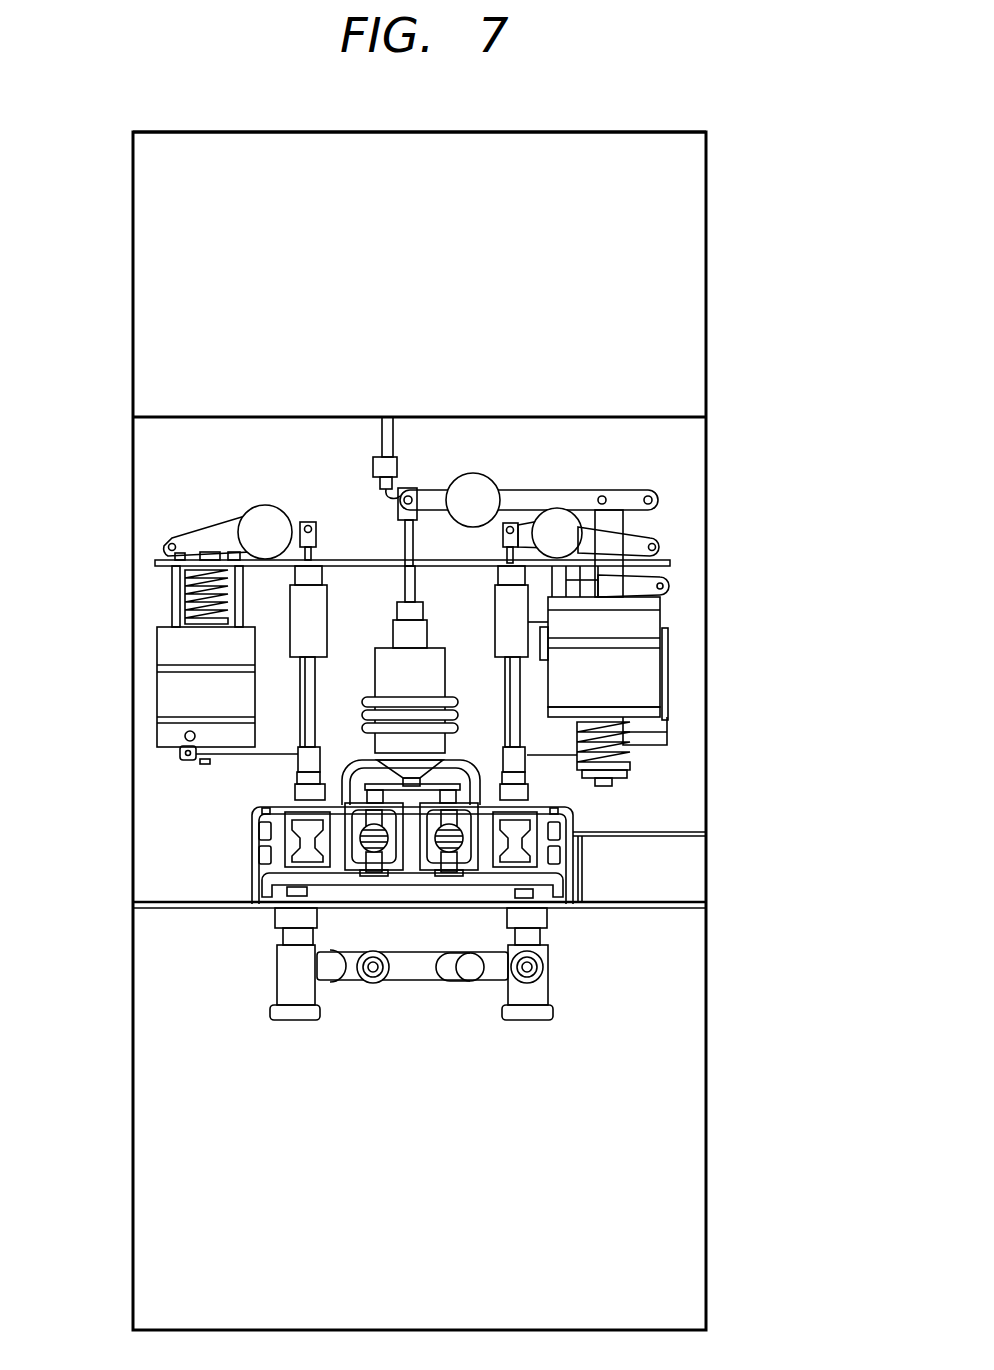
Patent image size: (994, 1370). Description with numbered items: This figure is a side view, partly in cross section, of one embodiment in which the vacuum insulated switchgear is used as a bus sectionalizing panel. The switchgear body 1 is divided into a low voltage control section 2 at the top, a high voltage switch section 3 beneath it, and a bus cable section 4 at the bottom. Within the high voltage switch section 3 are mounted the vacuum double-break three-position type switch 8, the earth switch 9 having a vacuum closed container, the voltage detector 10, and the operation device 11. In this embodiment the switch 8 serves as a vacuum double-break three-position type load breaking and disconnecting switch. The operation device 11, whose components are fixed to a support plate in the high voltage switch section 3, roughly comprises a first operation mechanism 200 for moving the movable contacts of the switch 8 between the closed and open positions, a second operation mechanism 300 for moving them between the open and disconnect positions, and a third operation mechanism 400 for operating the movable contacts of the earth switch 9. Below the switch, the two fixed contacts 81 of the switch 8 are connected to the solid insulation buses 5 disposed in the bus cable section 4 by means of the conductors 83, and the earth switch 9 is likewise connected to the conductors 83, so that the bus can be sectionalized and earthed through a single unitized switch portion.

The body 1 is at (728, 228).
The low voltage control section 2 is at (680, 308).
The high voltage switch section 3 is at (680, 440).
The bus cable section 4 is at (690, 958).
The solid insulation buses 5 is at (280, 960).
The vacuum double-break three-position type switch 8 is at (412, 880).
The earth switch 9 is at (282, 800).
The voltage detector 10 is at (258, 840).
The operation device 11 is at (676, 512).
The fixed contacts 81 is at (365, 876).
The conductors 83 is at (262, 885).
The first operation mechanism 200 is at (680, 608).
The second operation mechanism 300 is at (150, 603).
The third operation mechanism 400 is at (692, 670).